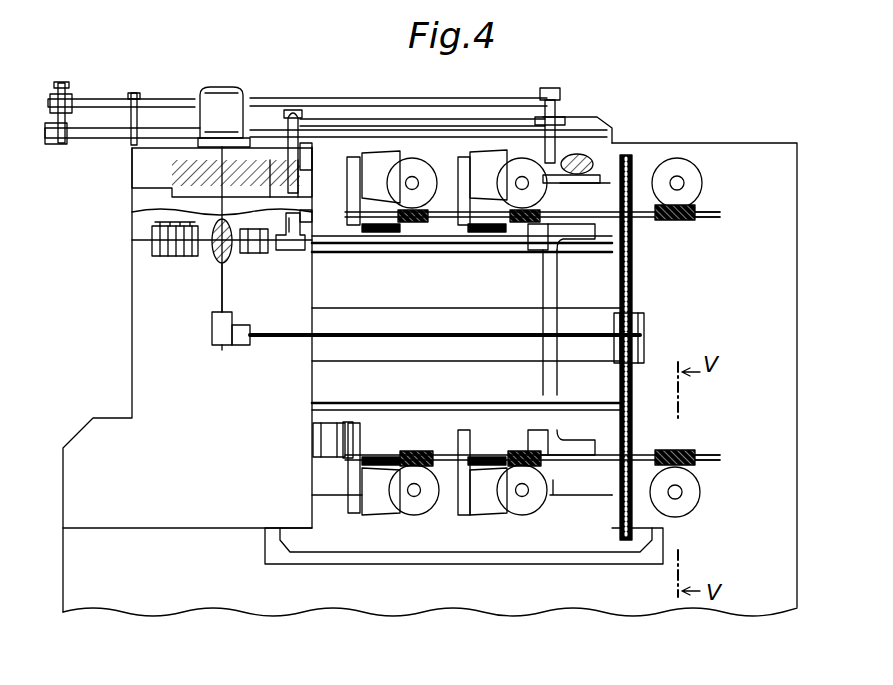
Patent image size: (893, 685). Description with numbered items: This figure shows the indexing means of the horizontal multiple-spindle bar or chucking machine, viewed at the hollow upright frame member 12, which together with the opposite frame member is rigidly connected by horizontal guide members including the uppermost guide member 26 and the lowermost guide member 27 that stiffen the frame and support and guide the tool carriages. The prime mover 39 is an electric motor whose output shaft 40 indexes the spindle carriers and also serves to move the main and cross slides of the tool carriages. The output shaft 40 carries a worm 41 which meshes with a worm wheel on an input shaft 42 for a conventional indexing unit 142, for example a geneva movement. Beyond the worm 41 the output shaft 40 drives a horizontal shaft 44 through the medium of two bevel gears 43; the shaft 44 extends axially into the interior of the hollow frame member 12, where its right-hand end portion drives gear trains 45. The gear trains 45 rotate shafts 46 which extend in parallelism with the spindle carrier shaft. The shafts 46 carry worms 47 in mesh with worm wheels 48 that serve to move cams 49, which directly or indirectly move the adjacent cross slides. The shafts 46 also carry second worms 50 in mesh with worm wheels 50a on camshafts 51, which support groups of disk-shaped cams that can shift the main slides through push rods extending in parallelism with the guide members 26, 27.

The upright frame member 12 is at (753, 150).
The uppermost guide member 26 is at (623, 132).
The lowermost guide member 27 is at (585, 540).
The prime mover 39 is at (222, 112).
The output shaft 40 is at (200, 162).
The worm 41 is at (132, 212).
The input shaft 42 is at (200, 256).
The indexing unit 142 is at (285, 270).
The bevel gears 43 is at (215, 330).
The horizontal shaft 44 is at (270, 343).
The gear trains 45 is at (632, 273).
The shafts 46 is at (565, 213).
The worms 47 is at (513, 213).
The worm wheels 48 is at (407, 167).
The cams 49 is at (488, 165).
The second worms 50 is at (687, 173).
The worm wheels 50a is at (697, 208).
The camshafts 51 is at (677, 490).